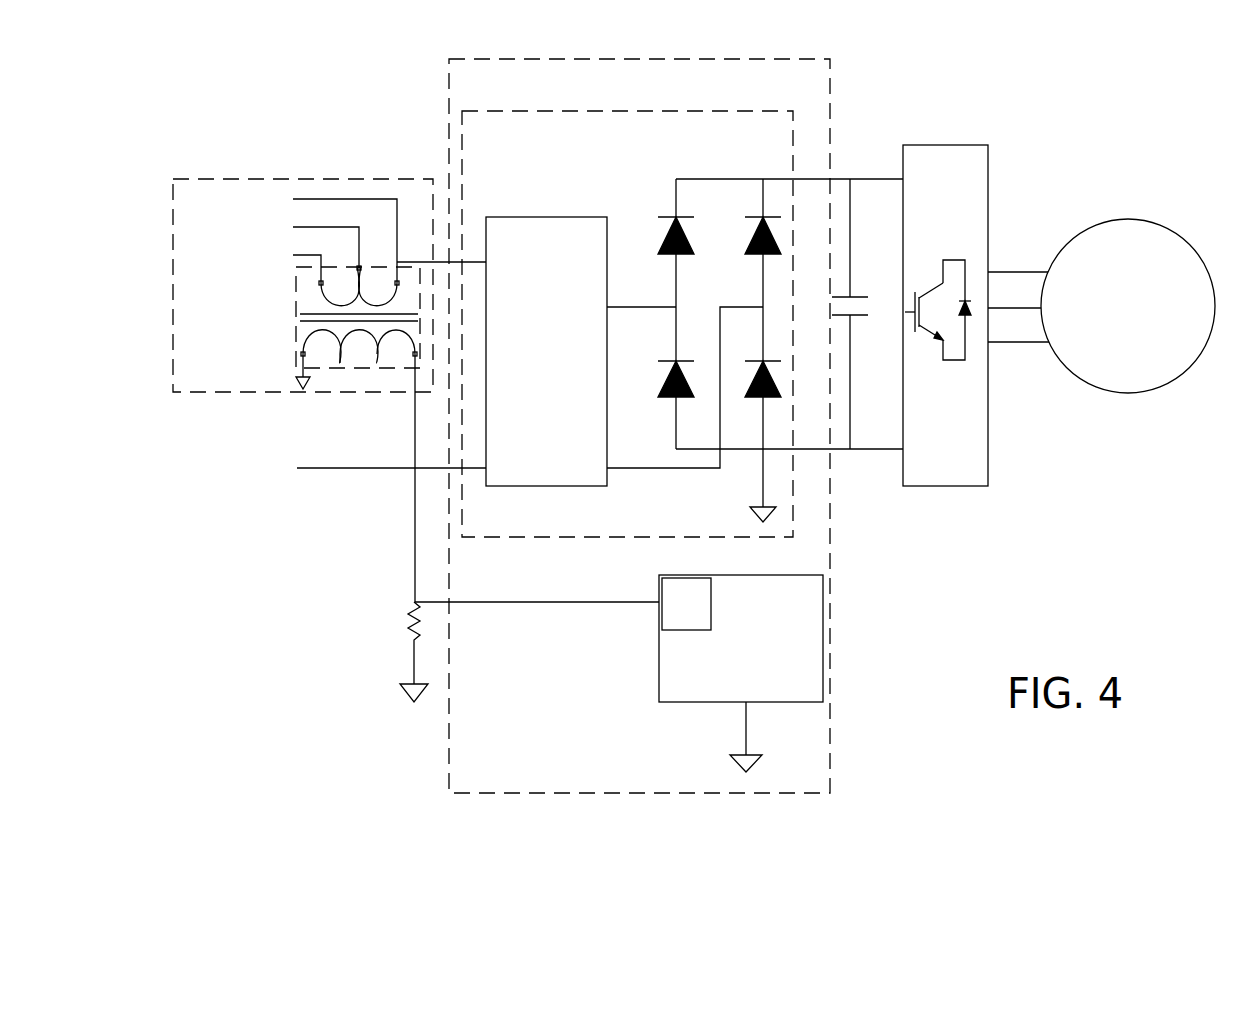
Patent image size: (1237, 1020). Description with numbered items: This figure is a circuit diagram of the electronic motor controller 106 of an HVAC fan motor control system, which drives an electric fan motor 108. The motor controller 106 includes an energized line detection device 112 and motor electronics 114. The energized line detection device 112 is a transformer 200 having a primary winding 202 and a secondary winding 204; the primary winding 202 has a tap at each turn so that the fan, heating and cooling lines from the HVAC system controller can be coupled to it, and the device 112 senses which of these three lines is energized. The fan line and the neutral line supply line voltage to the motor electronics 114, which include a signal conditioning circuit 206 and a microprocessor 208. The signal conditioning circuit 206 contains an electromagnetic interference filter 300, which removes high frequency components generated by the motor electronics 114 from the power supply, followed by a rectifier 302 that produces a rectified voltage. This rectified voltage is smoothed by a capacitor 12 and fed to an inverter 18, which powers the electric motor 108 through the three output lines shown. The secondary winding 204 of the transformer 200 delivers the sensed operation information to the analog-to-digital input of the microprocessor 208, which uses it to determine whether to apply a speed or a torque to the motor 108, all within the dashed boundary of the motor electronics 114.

The electronic motor controller 106 is at (372, 60).
The energized line detection device 112 is at (186, 181).
The transformer 200 is at (296, 316).
The primary winding 202 is at (268, 280).
The secondary winding 204 is at (268, 344).
The motor electronics 114 is at (527, 797).
The signal conditioning circuit 206 is at (493, 111).
The electromagnetic interference (EMI) filter 300 is at (519, 217).
The rectifier 302 is at (717, 165).
The electric motor 12 is at (857, 297).
The inverter 18 is at (940, 145).
The electric fan motor 108 is at (1126, 219).
The microprocessor 208 is at (737, 576).